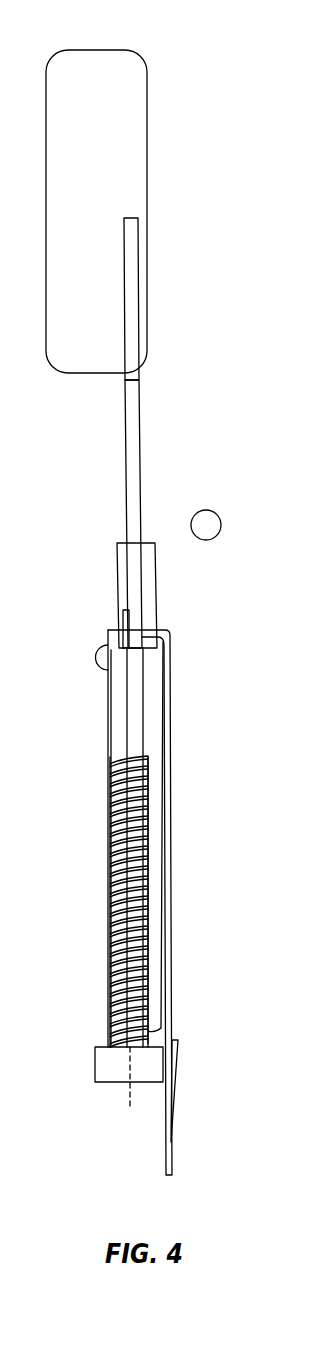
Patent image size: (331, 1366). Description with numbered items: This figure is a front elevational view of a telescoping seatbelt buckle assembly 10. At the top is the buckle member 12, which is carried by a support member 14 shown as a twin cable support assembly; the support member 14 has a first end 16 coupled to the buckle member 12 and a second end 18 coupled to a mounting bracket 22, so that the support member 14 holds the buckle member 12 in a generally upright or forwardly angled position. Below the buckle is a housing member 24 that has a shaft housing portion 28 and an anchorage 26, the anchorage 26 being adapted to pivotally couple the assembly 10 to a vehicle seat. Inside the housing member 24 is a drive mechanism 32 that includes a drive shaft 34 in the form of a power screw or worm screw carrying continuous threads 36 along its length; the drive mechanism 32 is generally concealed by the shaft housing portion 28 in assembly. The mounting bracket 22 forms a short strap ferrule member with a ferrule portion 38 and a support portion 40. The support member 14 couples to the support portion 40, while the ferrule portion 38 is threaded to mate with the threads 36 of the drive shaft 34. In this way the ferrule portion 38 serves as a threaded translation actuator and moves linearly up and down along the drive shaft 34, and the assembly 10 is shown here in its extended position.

The telescoping seatbelt buckle assembly 10 is at (216, 92).
The buckle member 12 is at (148, 115).
The support member 14 is at (141, 440).
The first end 16 is at (130, 258).
The second end 18 is at (133, 572).
The mounting bracket 22 is at (127, 728).
The housing member 24 is at (172, 932).
The anchorage 26 is at (170, 1142).
The shaft housing portion 28 is at (172, 815).
The drive mechanism 32 is at (147, 887).
The drive shaft 34 is at (115, 830).
The threads 36 is at (122, 878).
The ferrule portion 38 is at (109, 697).
The support portion 40 is at (117, 557).